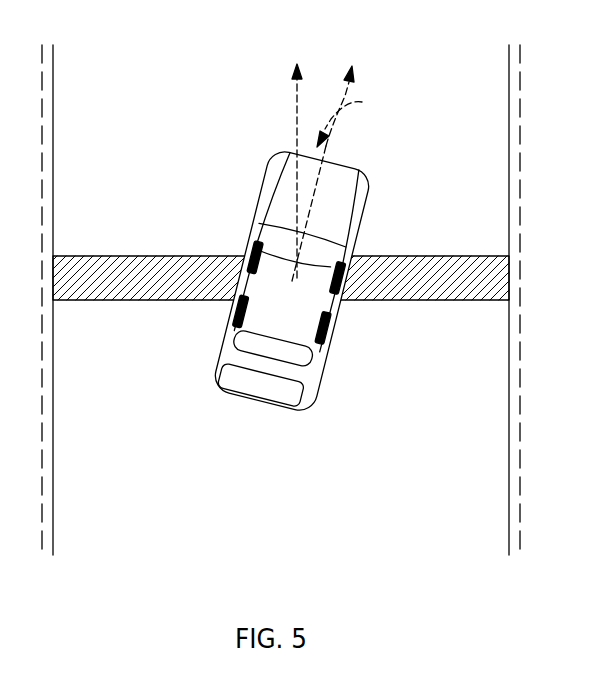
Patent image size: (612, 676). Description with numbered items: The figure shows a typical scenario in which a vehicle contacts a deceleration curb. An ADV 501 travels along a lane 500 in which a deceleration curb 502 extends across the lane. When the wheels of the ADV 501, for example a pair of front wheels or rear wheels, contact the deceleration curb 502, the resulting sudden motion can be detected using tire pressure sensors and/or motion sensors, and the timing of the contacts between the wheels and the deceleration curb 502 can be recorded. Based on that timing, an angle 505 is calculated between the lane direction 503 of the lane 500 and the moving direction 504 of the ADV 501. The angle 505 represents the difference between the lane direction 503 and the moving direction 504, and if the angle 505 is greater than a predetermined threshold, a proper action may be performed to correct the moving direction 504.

The lane 500 is at (477, 490).
The ADV 501 is at (252, 404).
The deceleration curb 502 is at (96, 255).
The lane direction 503 is at (296, 107).
The moving direction 504 is at (356, 79).
The angle 505 is at (362, 102).